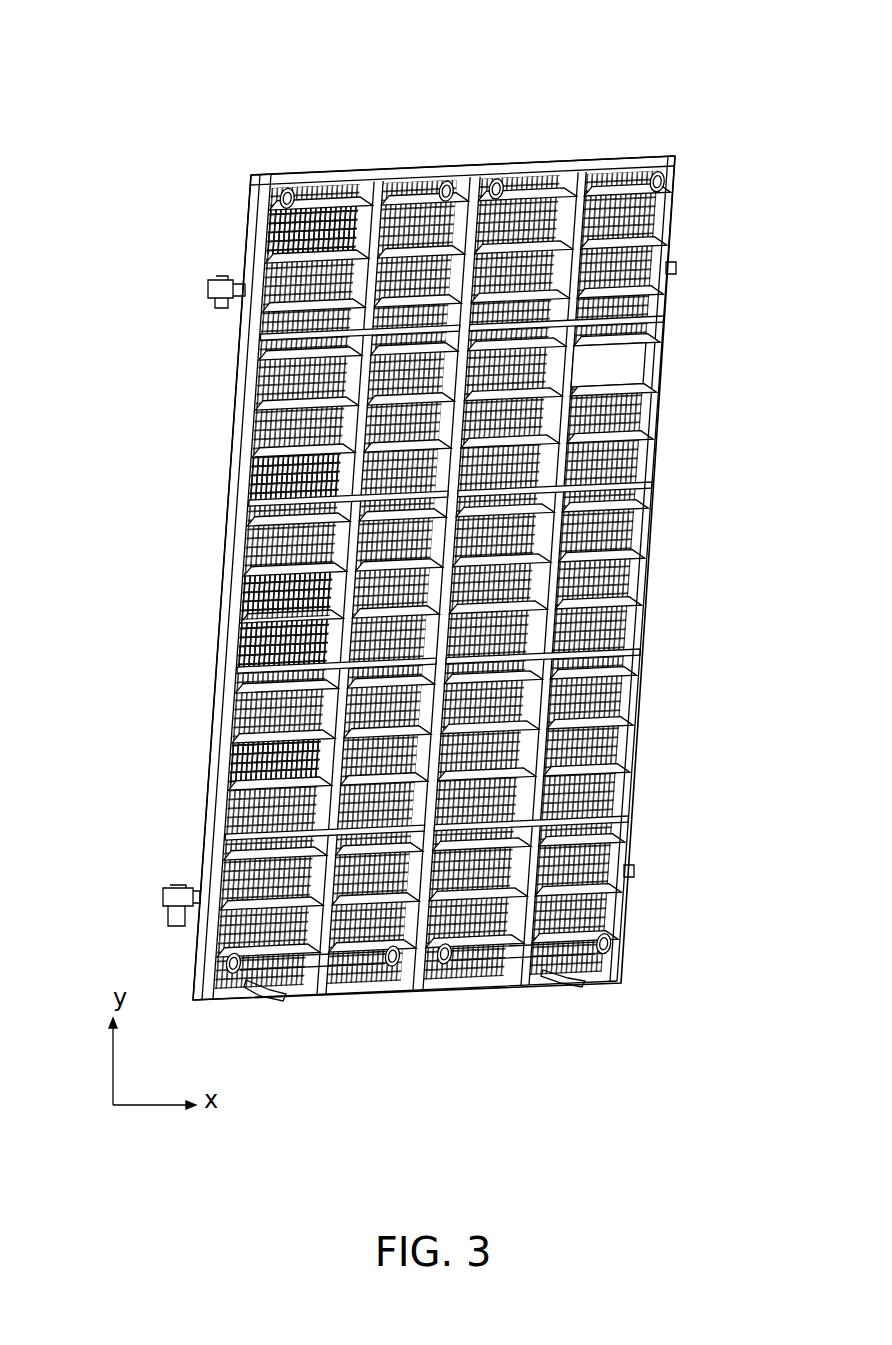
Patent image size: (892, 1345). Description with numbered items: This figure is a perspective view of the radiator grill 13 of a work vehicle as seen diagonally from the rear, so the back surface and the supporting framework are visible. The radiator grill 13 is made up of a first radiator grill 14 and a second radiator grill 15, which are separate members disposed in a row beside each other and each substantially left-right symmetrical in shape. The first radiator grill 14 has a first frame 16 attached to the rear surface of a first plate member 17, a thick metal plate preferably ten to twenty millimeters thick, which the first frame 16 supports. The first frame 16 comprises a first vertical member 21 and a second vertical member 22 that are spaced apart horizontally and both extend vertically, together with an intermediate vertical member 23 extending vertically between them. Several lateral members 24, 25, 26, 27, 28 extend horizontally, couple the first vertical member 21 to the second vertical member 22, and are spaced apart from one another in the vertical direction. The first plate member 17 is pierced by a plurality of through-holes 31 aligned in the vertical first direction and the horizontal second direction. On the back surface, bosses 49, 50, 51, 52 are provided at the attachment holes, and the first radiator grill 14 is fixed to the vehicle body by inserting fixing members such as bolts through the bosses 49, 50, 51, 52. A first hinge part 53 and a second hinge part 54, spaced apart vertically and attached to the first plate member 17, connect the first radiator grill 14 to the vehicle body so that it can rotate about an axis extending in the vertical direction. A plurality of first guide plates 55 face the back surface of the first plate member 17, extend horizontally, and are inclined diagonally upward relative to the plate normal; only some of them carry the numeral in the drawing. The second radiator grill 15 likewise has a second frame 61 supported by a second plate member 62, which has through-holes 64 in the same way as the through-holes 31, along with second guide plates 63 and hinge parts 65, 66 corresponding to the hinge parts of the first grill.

The radiator grill 13 is at (373, 48).
The first radiator grill 14 is at (360, 142).
The second radiator grill 15 is at (560, 137).
The first frame 16 is at (229, 543).
The first plate member 17 is at (222, 428).
The first vertical member 21 is at (235, 473).
The second vertical member 22 is at (238, 594).
The intermediate vertical member 23 is at (330, 230).
The lateral member 24 is at (300, 165).
The lateral member 25 is at (275, 356).
The lateral member 26 is at (240, 520).
The lateral member 27 is at (270, 688).
The lateral member 28 is at (255, 787).
The through-holes 31 is at (240, 635).
The boss 49 is at (265, 185).
The boss 50 is at (215, 957).
The boss 51 is at (432, 150).
The boss 52 is at (385, 965).
The first hinge part 53 is at (200, 290).
The second hinge part 54 is at (155, 885).
The first guide plates 55 is at (247, 738).
The second frame 61 is at (663, 520).
The second plate member 62 is at (640, 372).
The second guide plates 63 is at (645, 335).
The through-holes 64 is at (632, 415).
The hinge part 65 is at (668, 260).
The hinge part 66 is at (628, 862).